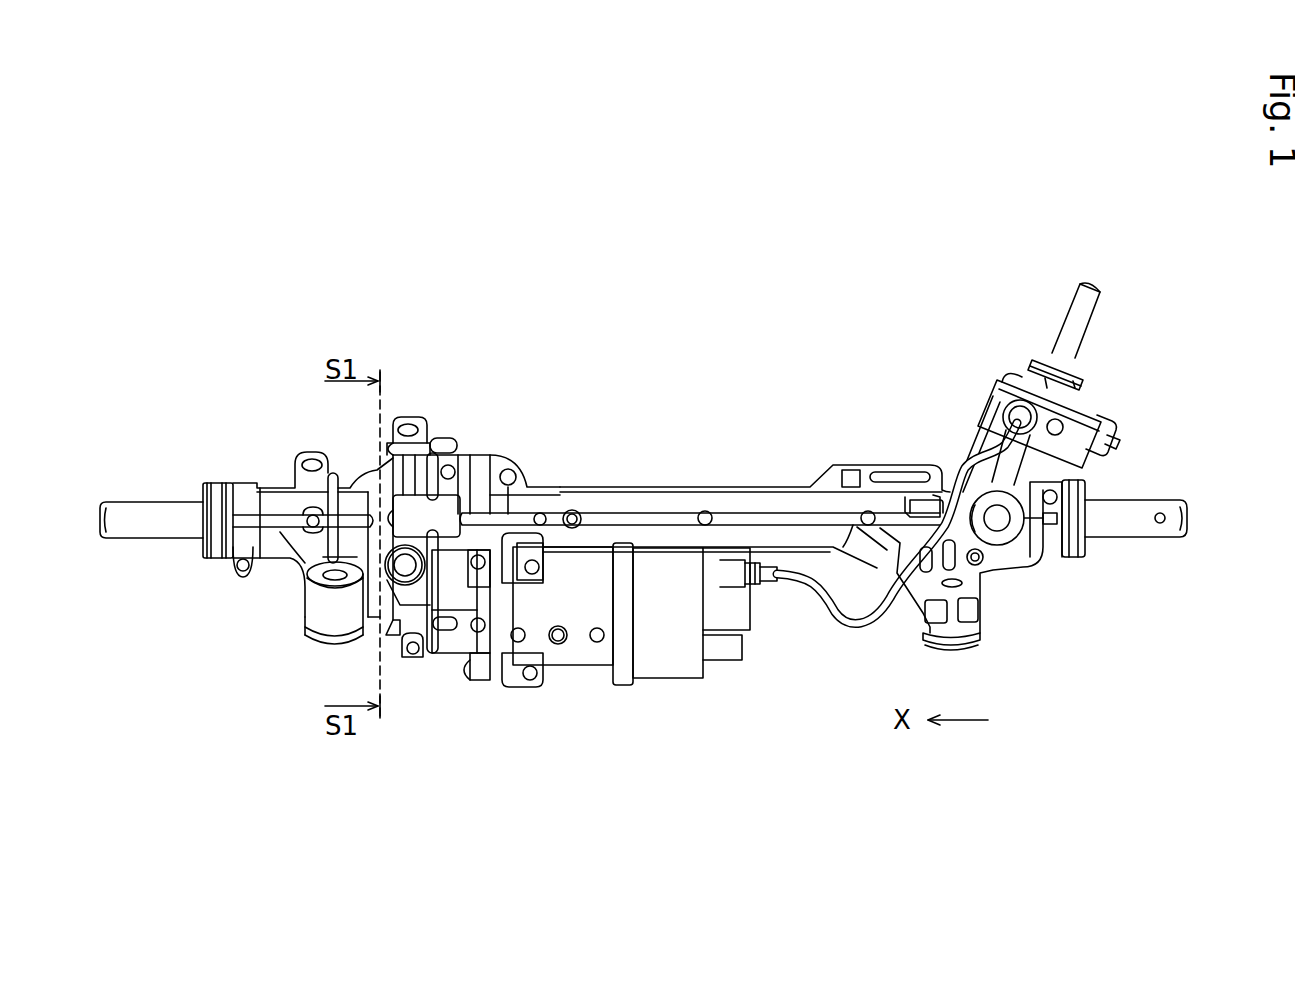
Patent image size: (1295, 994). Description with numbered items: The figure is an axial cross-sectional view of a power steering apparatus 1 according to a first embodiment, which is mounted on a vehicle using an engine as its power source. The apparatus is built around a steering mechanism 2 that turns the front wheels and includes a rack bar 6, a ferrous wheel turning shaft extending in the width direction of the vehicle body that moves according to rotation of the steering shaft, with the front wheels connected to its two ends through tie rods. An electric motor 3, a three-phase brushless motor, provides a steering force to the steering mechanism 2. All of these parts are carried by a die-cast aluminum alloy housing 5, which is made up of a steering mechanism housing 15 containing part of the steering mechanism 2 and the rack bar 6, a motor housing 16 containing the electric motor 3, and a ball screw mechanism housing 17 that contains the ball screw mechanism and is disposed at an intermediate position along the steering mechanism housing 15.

The power steering apparatus 1 is at (706, 404).
The steering mechanism 2 is at (988, 626).
The electric motor 3 is at (597, 675).
The housing 5 is at (780, 470).
The rack bar 6 is at (1113, 542).
The steering mechanism housing 15 is at (1085, 415).
The motor housing 16 is at (565, 648).
The ball screw mechanism housing 17 is at (387, 643).